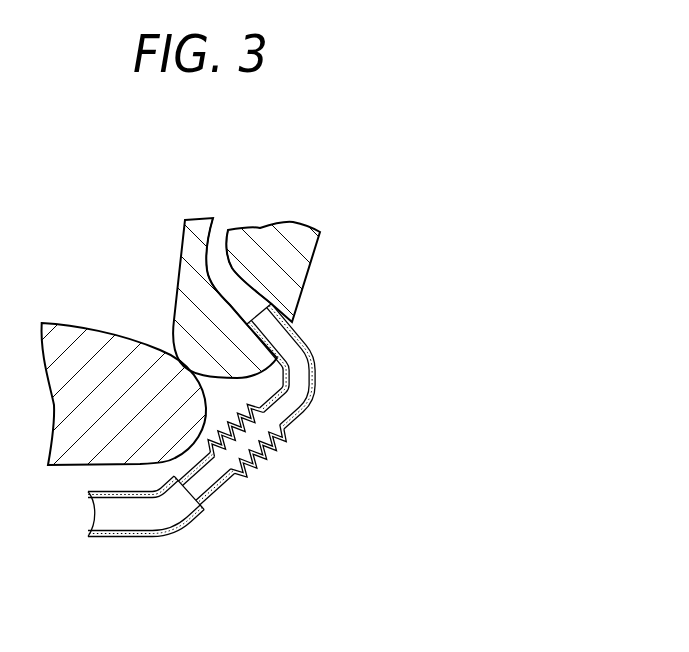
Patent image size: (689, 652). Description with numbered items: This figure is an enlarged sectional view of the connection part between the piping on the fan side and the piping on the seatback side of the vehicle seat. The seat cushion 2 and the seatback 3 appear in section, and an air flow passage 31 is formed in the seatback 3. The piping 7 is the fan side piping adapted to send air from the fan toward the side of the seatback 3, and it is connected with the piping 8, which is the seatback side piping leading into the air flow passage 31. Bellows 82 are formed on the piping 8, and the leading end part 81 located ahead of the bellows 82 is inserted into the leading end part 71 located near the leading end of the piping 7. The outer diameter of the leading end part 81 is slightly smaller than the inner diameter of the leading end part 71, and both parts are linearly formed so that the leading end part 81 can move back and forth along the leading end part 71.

The seat cushion 2 is at (95, 345).
The seatback 3 is at (251, 300).
The air flow passage 31 is at (237, 285).
The piping 8 is at (278, 429).
The leading end part 81 is at (232, 485).
The bellows 82 is at (277, 463).
The piping 7 is at (156, 538).
The leading end part 71 is at (193, 520).